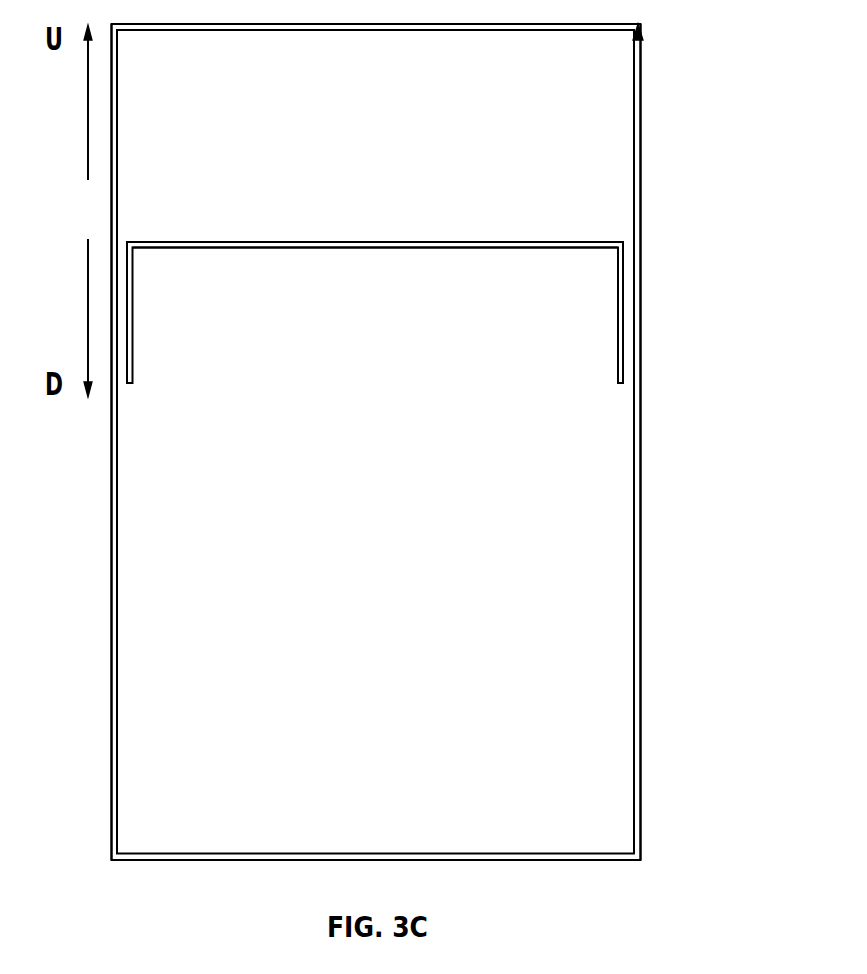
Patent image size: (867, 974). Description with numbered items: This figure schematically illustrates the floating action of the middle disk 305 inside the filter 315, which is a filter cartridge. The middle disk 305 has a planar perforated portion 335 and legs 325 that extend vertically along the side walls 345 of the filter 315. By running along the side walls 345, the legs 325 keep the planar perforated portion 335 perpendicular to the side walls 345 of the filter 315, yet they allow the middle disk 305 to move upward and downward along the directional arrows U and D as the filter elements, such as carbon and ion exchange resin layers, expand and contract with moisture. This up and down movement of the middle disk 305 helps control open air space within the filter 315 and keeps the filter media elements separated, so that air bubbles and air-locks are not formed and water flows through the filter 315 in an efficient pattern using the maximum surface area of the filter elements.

The filter 315 is at (654, 79).
The side walls 345 is at (132, 732).
The middle disk 305 is at (340, 278).
The planar perforated portion 335 is at (392, 235).
The legs 325 is at (628, 290).